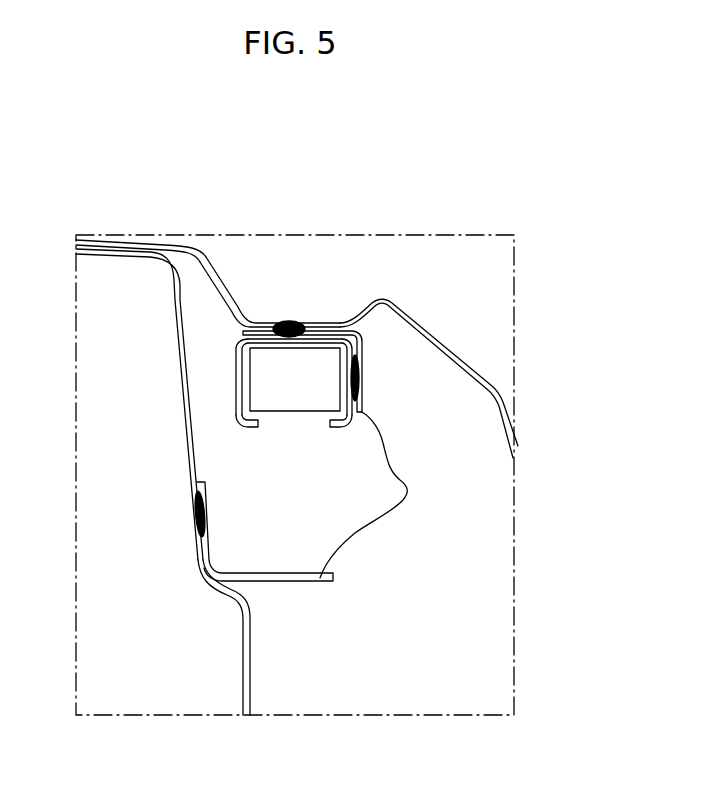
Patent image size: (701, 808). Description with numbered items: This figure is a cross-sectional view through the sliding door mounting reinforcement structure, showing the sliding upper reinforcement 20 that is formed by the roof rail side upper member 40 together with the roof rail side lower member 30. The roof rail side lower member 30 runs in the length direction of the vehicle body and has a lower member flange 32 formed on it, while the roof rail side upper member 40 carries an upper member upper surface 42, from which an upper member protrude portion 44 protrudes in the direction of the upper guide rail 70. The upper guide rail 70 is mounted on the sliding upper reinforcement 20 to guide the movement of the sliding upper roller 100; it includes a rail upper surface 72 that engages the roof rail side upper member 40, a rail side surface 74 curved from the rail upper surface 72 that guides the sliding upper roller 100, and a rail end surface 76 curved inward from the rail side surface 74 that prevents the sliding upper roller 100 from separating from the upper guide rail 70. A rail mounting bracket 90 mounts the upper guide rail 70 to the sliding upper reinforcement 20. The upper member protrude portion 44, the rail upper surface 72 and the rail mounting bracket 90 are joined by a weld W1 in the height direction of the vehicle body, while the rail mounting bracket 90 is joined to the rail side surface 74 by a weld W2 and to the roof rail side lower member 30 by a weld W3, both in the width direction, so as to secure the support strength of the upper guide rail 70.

The sliding upper reinforcement 20 is at (482, 359).
The roof rail side lower member 30 is at (222, 646).
The lower member flange 32 is at (108, 252).
The roof rail side upper member 40 is at (297, 312).
The upper member upper surface 42 is at (113, 247).
The upper member protrude portion 44 is at (252, 322).
The upper guide rail 70 is at (130, 343).
The rail upper surface 72 is at (258, 340).
The rail side surface 74 is at (238, 387).
The rail end surface 76 is at (257, 424).
The rail mounting bracket 90 is at (404, 492).
The sliding upper roller 100 is at (322, 350).
The weld W1 is at (289, 321).
The weld W2 is at (359, 380).
The weld W3 is at (196, 516).